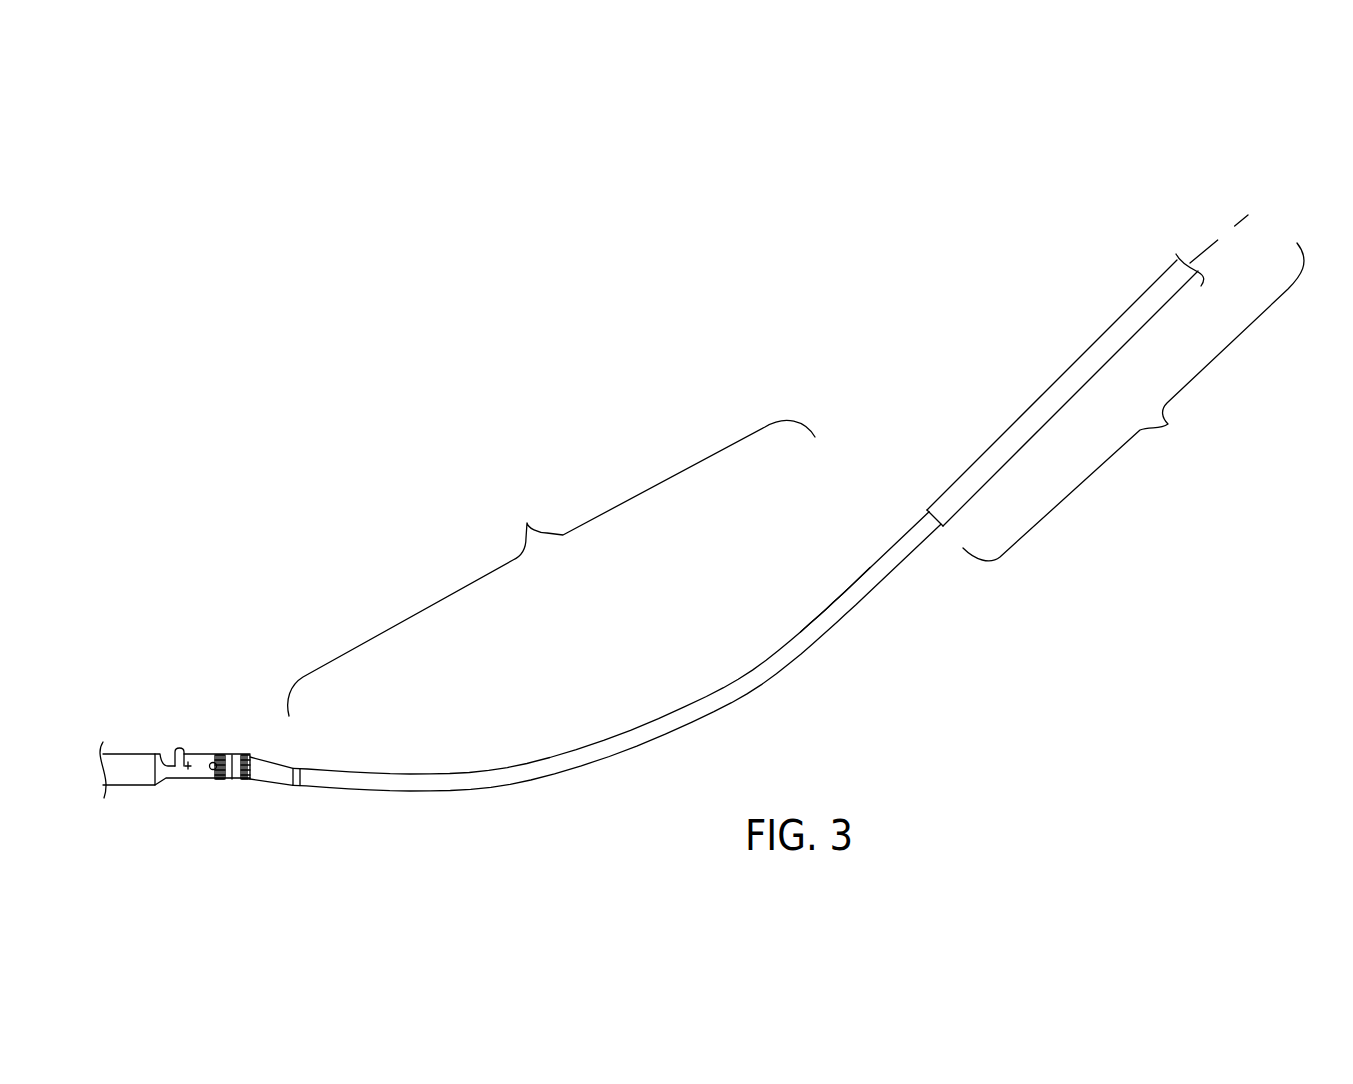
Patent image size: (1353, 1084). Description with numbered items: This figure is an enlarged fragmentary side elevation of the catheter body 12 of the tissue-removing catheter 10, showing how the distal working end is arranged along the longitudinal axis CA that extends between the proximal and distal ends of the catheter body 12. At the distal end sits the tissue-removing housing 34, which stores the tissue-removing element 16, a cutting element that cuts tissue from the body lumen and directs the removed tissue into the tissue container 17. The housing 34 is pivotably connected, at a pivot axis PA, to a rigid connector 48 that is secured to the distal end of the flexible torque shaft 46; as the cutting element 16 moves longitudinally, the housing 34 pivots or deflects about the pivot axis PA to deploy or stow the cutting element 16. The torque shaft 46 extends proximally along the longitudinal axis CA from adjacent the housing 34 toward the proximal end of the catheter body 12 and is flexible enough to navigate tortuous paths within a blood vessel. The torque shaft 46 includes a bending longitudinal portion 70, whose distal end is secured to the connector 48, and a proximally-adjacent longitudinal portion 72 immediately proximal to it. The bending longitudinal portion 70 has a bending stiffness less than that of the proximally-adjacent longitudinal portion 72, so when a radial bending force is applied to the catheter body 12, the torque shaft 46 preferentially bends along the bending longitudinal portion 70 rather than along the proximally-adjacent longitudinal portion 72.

The tissue-removing catheter 10 is at (333, 385).
The catheter body 12 is at (622, 713).
The tissue-removing element 16 is at (177, 747).
The tissue container 17 is at (127, 780).
The tissue-removing housing 34 is at (174, 776).
The flexible torque shaft 46 is at (847, 590).
The rigid connector 48 is at (230, 782).
The bending longitudinal portion 70 is at (525, 518).
The proximally-adjacent longitudinal portion 72 is at (1168, 424).
The pivot axis PA is at (215, 758).
The longitudinal axis CA is at (1223, 236).